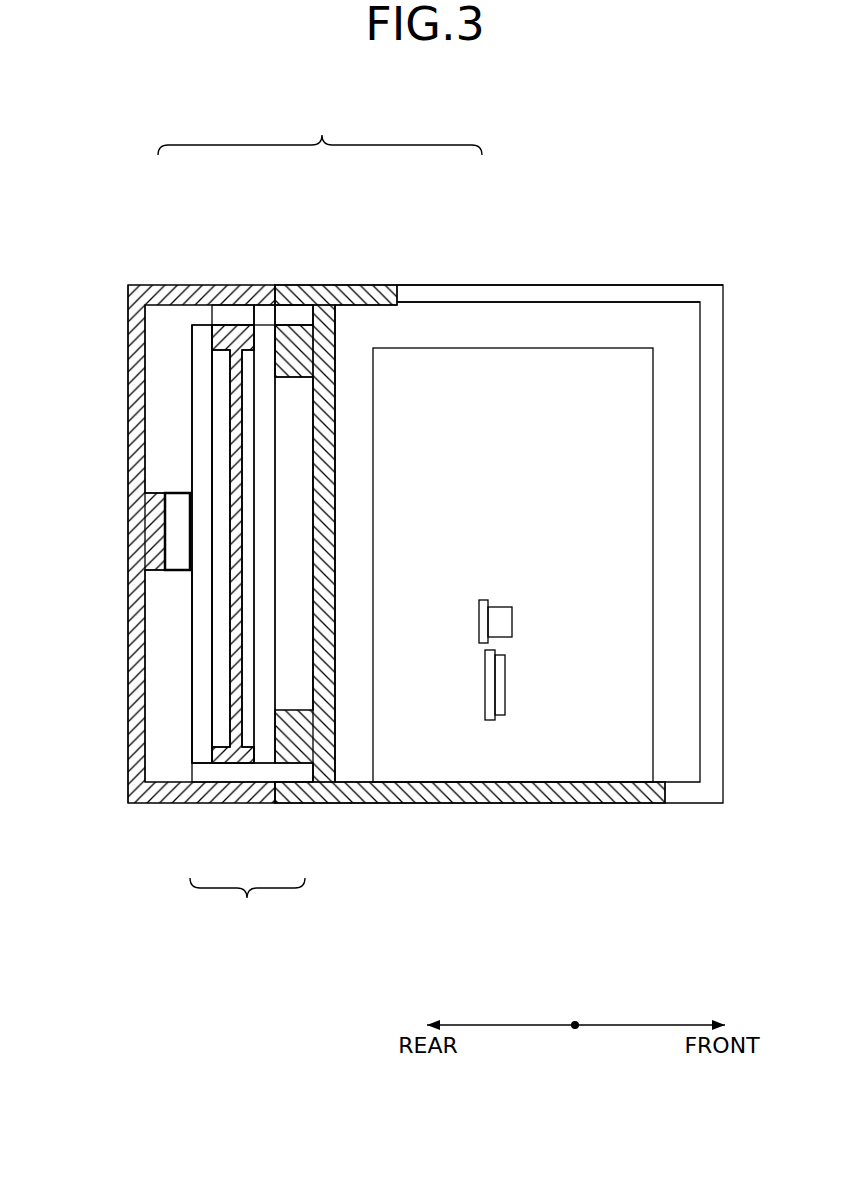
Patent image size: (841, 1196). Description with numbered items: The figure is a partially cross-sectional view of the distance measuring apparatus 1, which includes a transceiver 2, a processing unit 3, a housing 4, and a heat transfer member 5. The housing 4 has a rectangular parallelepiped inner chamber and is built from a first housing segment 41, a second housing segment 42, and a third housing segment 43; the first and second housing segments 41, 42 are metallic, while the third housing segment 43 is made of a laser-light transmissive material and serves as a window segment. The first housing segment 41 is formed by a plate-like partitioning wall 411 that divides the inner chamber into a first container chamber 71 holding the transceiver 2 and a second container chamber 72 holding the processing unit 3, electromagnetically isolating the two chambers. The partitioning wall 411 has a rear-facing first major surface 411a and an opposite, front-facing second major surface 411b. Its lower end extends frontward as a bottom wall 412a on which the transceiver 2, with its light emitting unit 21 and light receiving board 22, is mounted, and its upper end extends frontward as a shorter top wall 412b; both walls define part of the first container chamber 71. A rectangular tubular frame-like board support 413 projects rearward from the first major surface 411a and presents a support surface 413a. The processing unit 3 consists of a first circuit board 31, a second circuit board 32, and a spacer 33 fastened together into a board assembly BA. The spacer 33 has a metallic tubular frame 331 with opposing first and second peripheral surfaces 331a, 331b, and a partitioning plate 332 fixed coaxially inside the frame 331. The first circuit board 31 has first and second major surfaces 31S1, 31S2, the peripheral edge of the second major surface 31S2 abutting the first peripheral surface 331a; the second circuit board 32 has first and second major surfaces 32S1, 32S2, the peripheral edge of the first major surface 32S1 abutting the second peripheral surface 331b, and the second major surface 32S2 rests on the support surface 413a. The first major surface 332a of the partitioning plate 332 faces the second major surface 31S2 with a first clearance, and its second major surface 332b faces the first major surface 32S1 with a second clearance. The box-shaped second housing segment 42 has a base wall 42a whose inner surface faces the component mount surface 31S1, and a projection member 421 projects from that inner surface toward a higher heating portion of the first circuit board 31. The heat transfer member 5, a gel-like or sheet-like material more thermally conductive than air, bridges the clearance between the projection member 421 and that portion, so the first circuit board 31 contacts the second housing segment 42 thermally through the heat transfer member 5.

The distance measuring apparatus 1 is at (645, 118).
The transceiver 2 is at (468, 756).
The light emitting unit 21 is at (498, 625).
The light receiving board 22 is at (505, 685).
The processing unit 3 is at (251, 847).
The first circuit board 31 is at (202, 768).
The second circuit board 32 is at (267, 768).
The spacer 33 is at (233, 768).
The frame 331 is at (218, 340).
The first peripheral surface 331a is at (212, 323).
The second peripheral surface 331b is at (252, 323).
The partitioning plate 332 is at (222, 387).
The first major surface 332a is at (230, 415).
The second major surface 332b is at (243, 437).
The first major surface 31S1 is at (190, 748).
The second major surface 31S2 is at (215, 716).
The first major surface 32S1 is at (273, 665).
The second major surface 32S2 is at (247, 699).
The housing 4 is at (320, 131).
The first housing segment 41 is at (330, 322).
The partitioning wall 411 is at (346, 646).
The first major surface 411a is at (313, 470).
The second major surface 411b is at (337, 565).
The bottom wall 412a is at (597, 795).
The top wall 412b is at (380, 297).
The board support 413 is at (286, 356).
The support surface 413a is at (277, 318).
The second housing segment 42 is at (173, 297).
The base wall 42a is at (128, 596).
The projection member 421 is at (152, 532).
The third housing segment 43 is at (455, 297).
The heat transfer member 5 is at (176, 512).
The first container chamber 71 is at (602, 332).
The second container chamber 72 is at (160, 660).
The board assembly BA is at (174, 702).